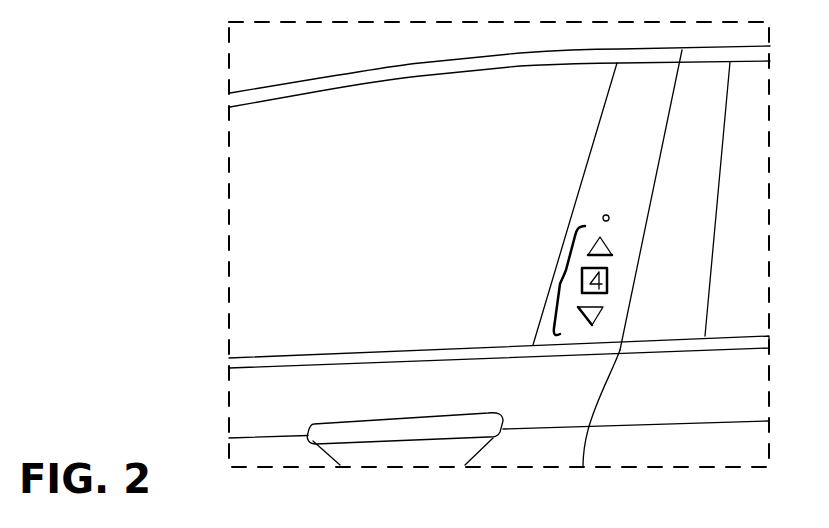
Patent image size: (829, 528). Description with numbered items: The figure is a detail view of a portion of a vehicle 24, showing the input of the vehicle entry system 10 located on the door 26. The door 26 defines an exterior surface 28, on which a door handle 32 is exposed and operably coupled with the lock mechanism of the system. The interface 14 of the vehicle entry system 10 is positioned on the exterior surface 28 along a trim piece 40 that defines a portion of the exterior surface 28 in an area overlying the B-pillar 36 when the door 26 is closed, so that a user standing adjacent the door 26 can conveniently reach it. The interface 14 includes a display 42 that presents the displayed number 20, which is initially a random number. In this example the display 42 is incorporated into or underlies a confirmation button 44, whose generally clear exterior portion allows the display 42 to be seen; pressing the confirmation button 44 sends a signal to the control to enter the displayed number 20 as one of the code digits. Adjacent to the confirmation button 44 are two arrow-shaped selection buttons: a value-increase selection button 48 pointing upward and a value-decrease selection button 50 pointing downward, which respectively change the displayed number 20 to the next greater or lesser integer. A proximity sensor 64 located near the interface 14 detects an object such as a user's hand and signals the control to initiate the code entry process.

The vehicle entry system 10 is at (632, 382).
The interface 14 is at (562, 280).
The displayed number 20 is at (582, 268).
The vehicle 24 is at (336, 69).
The door 26 is at (335, 352).
The exterior surface 28 is at (505, 393).
The door handle 32 is at (418, 432).
The B-pillar 36 is at (613, 173).
The trim piece 40 is at (625, 120).
The display 42 is at (604, 295).
The confirmation button 44 is at (608, 270).
The value-increase selection button 48 is at (603, 241).
The value-decrease selection button 50 is at (582, 314).
The proximity sensor 64 is at (610, 216).